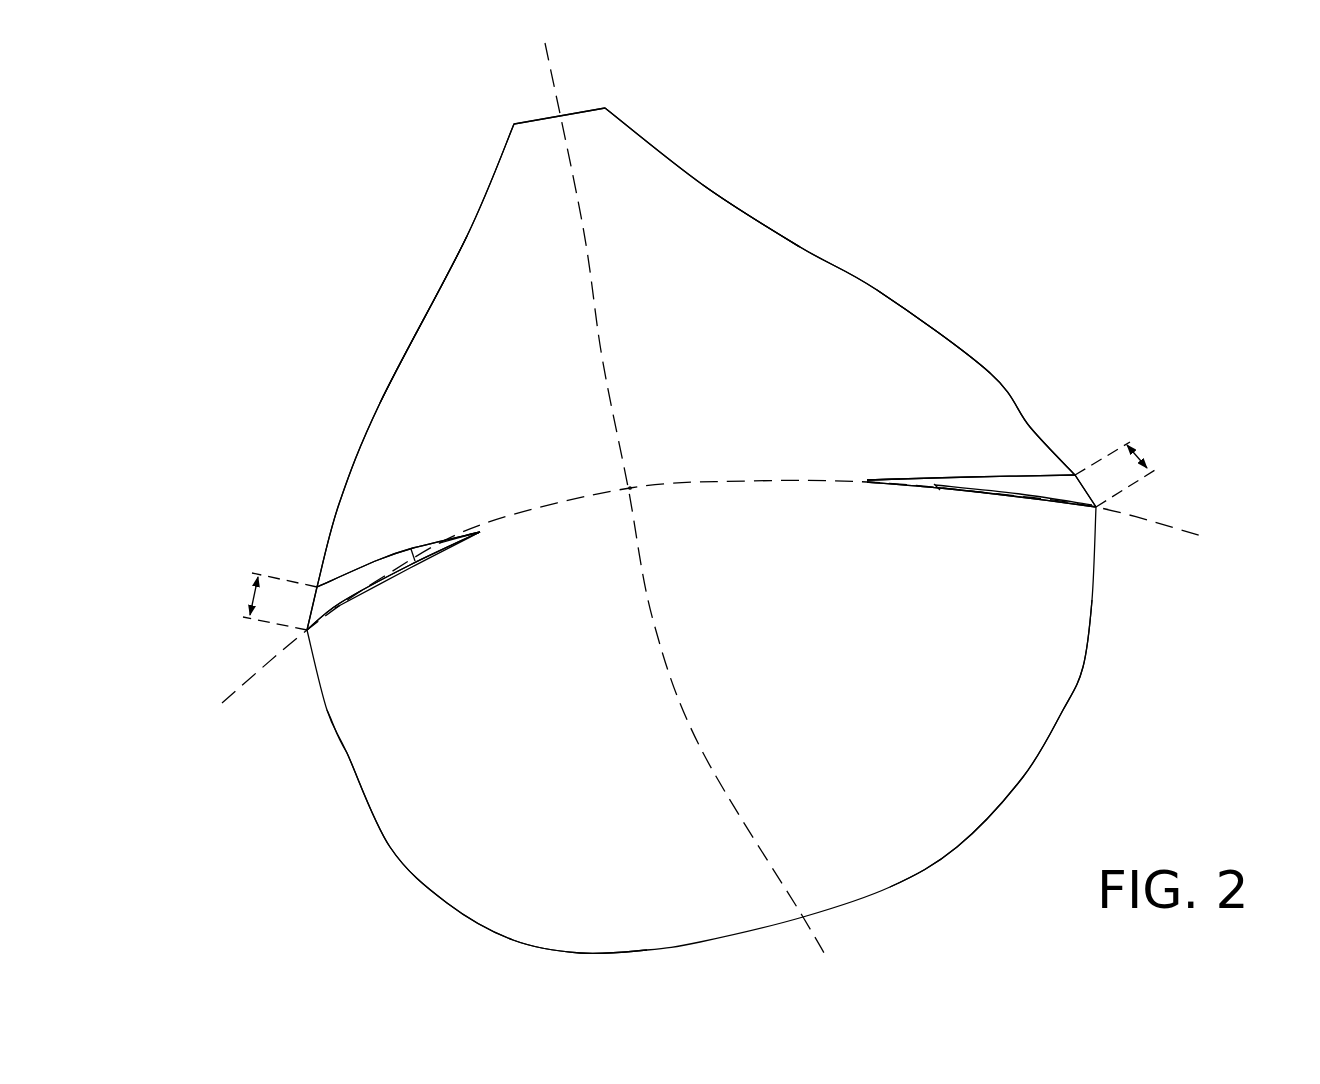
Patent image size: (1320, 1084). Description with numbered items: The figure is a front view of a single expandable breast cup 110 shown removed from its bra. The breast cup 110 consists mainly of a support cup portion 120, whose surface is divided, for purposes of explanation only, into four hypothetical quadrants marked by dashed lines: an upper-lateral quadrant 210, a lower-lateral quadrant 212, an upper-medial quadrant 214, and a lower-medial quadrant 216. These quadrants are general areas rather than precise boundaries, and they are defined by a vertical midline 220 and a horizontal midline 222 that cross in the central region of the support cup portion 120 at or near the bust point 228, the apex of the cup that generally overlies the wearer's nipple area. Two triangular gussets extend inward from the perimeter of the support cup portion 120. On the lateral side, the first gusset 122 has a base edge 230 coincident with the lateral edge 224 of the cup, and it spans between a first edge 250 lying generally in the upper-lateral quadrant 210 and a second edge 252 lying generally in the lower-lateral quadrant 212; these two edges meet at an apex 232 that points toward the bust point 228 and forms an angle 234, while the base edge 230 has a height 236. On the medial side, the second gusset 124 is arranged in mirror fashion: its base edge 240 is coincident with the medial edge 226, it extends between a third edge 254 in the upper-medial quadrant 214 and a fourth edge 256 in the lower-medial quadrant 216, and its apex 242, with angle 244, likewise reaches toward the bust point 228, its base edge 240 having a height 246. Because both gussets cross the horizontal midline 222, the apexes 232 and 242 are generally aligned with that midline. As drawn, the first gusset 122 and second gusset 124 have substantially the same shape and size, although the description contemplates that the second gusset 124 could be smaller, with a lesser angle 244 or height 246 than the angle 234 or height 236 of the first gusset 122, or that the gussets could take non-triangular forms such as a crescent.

The breast cup 110 is at (940, 156).
The support cup portion 120 is at (862, 313).
The first gusset 122 is at (327, 597).
The second gusset 124 is at (1047, 486).
The upper-lateral quadrant 210 is at (492, 262).
The lower-lateral quadrant 212 is at (430, 808).
The upper-medial quadrant 214 is at (692, 205).
The lower-medial quadrant 216 is at (1017, 688).
The vertical midline 220 is at (547, 58).
The horizontal midline 222 is at (1173, 533).
The lateral edge 224 is at (376, 405).
The medial edge 226 is at (992, 370).
The bust point 228 is at (632, 486).
The base edge 230 is at (306, 607).
The apex 232 is at (478, 524).
The angle 234 is at (413, 558).
The height 236 is at (253, 600).
The base edge 240 is at (1094, 488).
The apex 242 is at (867, 481).
The angle 244 is at (940, 489).
The height 246 is at (1148, 463).
The first edge 250 is at (379, 557).
The second edge 252 is at (372, 592).
The third edge 254 is at (977, 476).
The fourth edge 256 is at (997, 496).